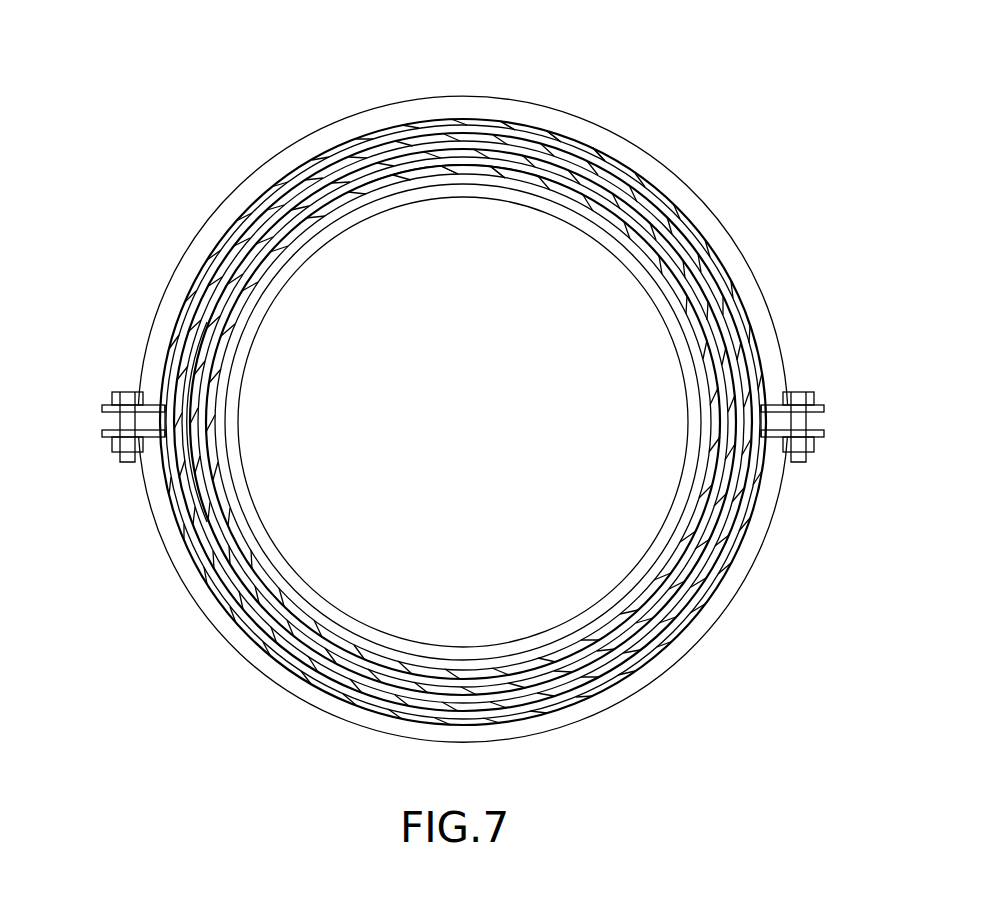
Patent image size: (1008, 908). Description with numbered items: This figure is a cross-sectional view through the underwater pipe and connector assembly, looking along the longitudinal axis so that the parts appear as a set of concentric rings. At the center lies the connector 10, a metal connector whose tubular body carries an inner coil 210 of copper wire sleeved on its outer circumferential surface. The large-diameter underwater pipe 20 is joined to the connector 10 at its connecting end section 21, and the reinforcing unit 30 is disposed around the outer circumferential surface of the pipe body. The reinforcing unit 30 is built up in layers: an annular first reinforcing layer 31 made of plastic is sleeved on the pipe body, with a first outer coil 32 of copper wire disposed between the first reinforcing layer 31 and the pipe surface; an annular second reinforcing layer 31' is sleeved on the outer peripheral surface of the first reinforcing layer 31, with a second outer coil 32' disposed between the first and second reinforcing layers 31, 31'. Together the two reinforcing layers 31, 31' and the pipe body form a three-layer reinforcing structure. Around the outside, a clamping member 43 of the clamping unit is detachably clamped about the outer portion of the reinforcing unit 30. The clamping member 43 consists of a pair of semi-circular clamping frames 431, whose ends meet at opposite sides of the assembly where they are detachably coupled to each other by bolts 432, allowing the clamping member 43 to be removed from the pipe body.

The connector 10 is at (429, 165).
The large-diameter underwater pipe 20 is at (346, 170).
The connecting end section 21 is at (470, 167).
The inner coil 210 is at (485, 175).
The reinforcing unit 30 is at (550, 122).
The first reinforcing layer 31 is at (491, 422).
The first outer coil 32 is at (510, 422).
The second reinforcing layer 31' is at (463, 422).
The second outer coil 32' is at (472, 422).
The clamping member 43 is at (620, 162).
The semi-circular clamping frame 431 is at (463, 421).
The bolt 432 is at (800, 391).